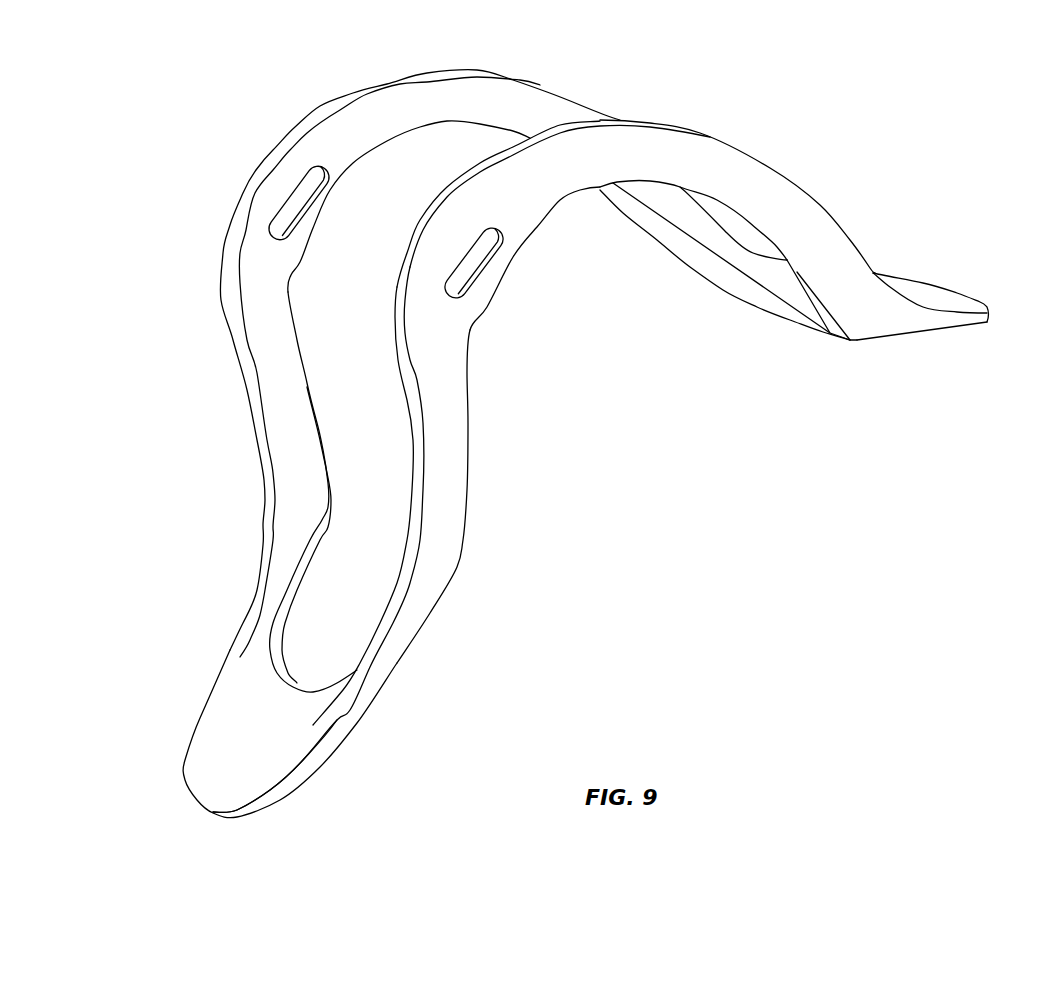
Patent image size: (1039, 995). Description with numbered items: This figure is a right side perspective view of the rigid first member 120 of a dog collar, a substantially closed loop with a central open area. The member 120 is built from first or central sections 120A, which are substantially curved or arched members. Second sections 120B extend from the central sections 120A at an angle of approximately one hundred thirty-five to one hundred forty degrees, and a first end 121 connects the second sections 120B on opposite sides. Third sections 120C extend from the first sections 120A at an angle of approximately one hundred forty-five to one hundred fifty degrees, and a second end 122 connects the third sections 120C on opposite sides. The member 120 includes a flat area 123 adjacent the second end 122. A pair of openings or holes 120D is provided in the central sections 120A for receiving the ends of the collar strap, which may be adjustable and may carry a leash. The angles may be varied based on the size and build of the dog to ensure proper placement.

The first member 120 is at (660, 493).
The first or central sections 120A is at (363, 107).
The second sections 120B is at (873, 333).
The third sections 120C is at (278, 560).
The openings or holes 120D is at (298, 203).
The first end 121 is at (990, 315).
The second end 122 is at (228, 815).
The flat area 123 is at (253, 765).